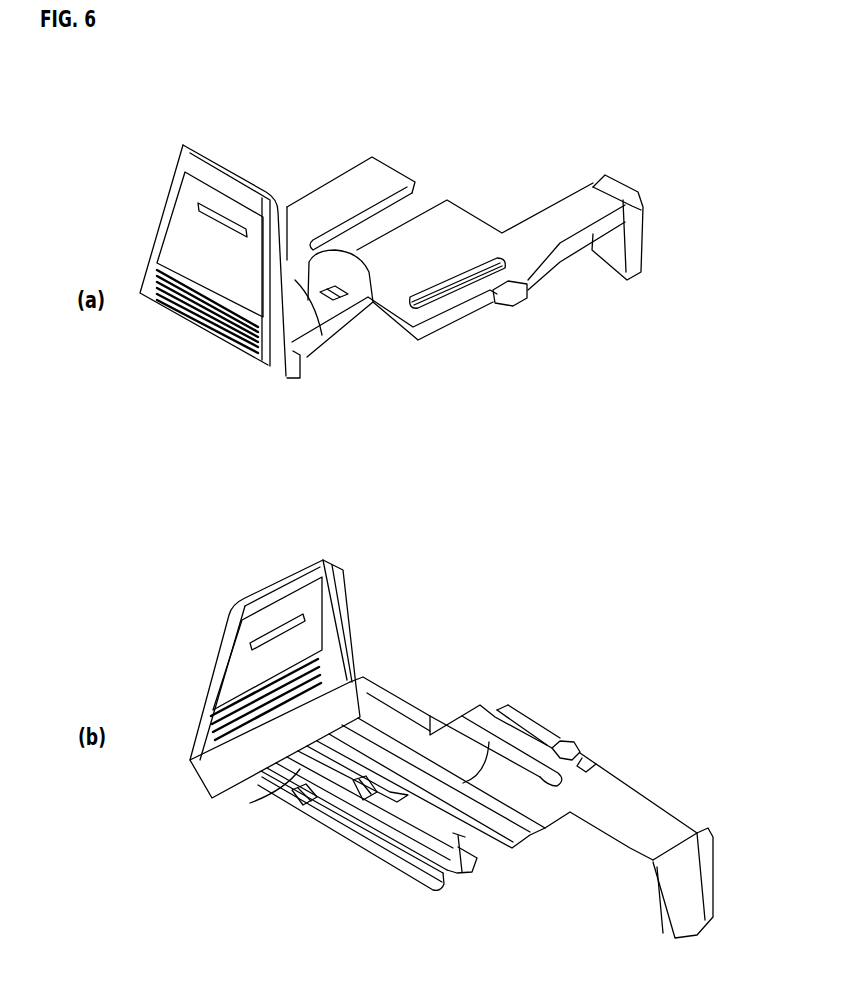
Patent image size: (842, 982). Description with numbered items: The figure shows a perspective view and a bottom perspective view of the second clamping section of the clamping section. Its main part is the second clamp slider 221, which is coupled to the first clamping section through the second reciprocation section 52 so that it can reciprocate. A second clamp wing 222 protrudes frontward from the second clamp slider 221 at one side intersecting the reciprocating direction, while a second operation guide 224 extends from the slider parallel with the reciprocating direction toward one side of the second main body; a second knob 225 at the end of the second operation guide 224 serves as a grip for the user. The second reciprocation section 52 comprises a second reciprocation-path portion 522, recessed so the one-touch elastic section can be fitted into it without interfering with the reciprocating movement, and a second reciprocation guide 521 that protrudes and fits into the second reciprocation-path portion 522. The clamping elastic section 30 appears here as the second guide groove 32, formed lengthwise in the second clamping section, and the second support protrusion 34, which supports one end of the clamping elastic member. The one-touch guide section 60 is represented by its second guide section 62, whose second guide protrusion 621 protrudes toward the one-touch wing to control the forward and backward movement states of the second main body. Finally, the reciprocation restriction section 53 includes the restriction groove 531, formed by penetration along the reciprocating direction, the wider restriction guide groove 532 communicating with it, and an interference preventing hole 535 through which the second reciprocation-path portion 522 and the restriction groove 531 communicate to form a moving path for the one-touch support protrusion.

The second clamp wing 222 is at (186, 190).
The second clamp slider 221 is at (347, 182).
The second operation guide 224 is at (545, 211).
The second knob 225 is at (648, 241).
The second reciprocation section 52 is at (340, 527).
The second reciprocation guide 521 is at (270, 800).
The second reciprocation-path portion 522 is at (397, 213).
The reciprocation restriction section 53 is at (446, 570).
The restriction groove 531 is at (323, 297).
The restriction guide groove 532 is at (288, 300).
The interference preventing hole 535 is at (370, 303).
The one-touch guide section 60 is at (615, 526).
The second guide section 62 is at (615, 526).
The second guide protrusion 621 is at (527, 297).
The clamping elastic section 30 is at (494, 699).
The second guide groove 32 is at (497, 718).
The second support protrusion 34 is at (430, 697).